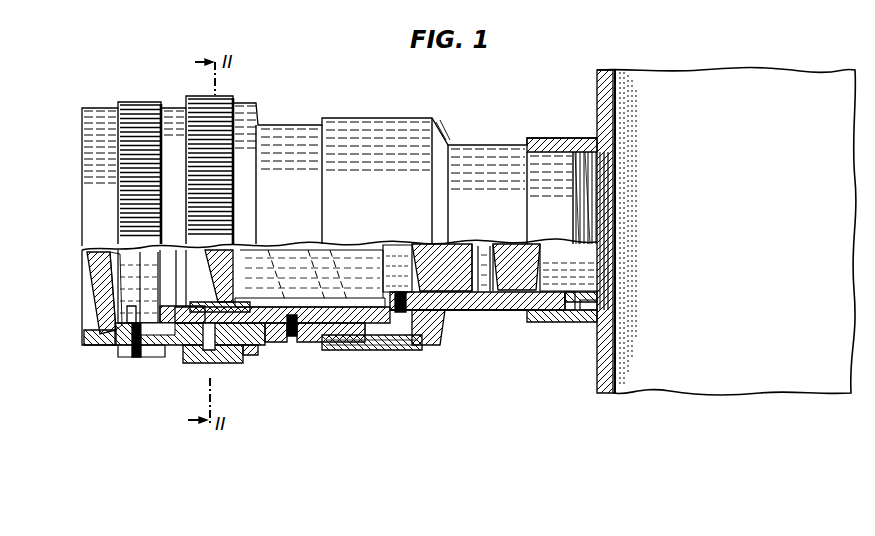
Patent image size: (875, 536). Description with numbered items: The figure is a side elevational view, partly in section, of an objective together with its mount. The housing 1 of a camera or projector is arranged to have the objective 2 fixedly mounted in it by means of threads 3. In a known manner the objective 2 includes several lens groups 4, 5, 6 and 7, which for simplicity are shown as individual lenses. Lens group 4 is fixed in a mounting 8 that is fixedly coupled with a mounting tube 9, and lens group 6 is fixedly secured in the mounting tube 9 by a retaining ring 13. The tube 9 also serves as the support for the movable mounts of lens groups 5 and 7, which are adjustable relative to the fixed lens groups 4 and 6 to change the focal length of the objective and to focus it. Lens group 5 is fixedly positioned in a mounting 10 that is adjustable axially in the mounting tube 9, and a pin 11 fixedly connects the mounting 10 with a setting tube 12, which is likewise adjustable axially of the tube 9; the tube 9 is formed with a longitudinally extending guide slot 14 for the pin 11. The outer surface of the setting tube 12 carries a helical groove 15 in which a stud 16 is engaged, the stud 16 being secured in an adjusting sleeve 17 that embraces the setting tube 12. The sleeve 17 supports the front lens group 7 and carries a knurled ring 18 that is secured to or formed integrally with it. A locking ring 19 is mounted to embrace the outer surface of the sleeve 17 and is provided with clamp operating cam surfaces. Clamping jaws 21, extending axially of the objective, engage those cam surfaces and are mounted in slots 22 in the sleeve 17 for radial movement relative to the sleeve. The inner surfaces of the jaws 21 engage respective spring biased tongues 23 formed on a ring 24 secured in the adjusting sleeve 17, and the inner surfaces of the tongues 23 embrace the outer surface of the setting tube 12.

The housing 1 is at (683, 90).
The objective 2 is at (371, 136).
The threads 3 is at (588, 150).
The lens group 4 is at (522, 292).
The lens group 5 is at (455, 296).
The lens group 6 is at (235, 268).
The lens group 7 is at (96, 270).
The mounting 8 is at (590, 296).
The mounting tube 9 is at (500, 312).
The mounting 10 is at (476, 300).
The pin 11 is at (432, 327).
The setting tube 12 is at (374, 340).
The retaining ring 13 is at (198, 302).
The guide slot 14 is at (360, 312).
The helical groove 15 is at (336, 256).
The stud 16 is at (296, 318).
The adjusting sleeve 17 is at (272, 330).
The knurled ring 18 is at (138, 110).
The locking ring 19 is at (196, 364).
The clamping jaws 21 is at (216, 358).
The slots 22 is at (232, 358).
The spring biased tongues 23 is at (166, 342).
The ring 24 is at (148, 345).